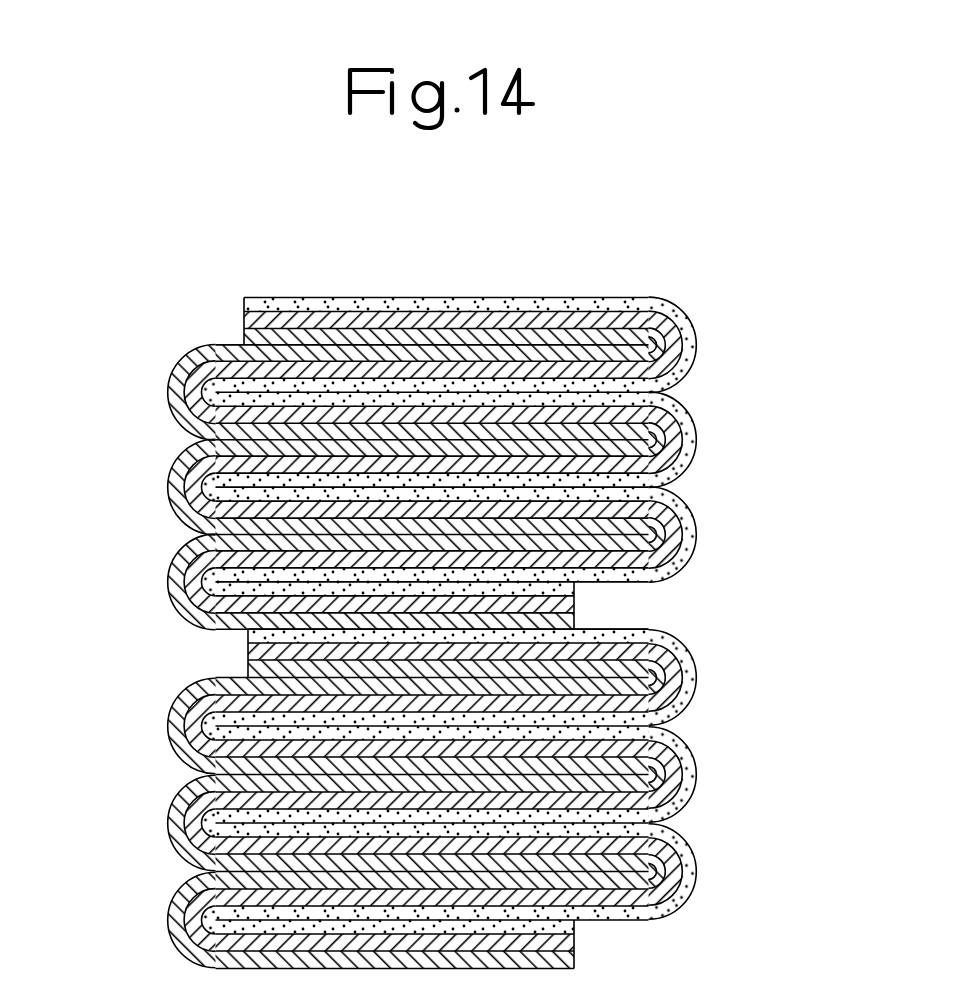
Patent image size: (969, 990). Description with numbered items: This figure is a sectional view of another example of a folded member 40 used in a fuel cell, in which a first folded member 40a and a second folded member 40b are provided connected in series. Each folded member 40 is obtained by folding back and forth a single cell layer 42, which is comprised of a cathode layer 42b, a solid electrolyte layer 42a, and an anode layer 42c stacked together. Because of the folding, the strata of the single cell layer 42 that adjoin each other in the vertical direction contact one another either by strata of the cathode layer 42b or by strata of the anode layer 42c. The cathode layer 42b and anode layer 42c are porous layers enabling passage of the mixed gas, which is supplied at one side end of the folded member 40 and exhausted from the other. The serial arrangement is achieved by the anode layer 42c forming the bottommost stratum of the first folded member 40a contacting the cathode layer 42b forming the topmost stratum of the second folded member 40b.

The folded member 40 is at (473, 240).
The first folded member 40a is at (845, 298).
The second folded member 40b is at (845, 629).
The single cell layer 42 is at (124, 232).
The solid electrolyte layer 42a is at (244, 324).
The cathode layer 42b is at (244, 305).
The anode layer 42c is at (244, 342).